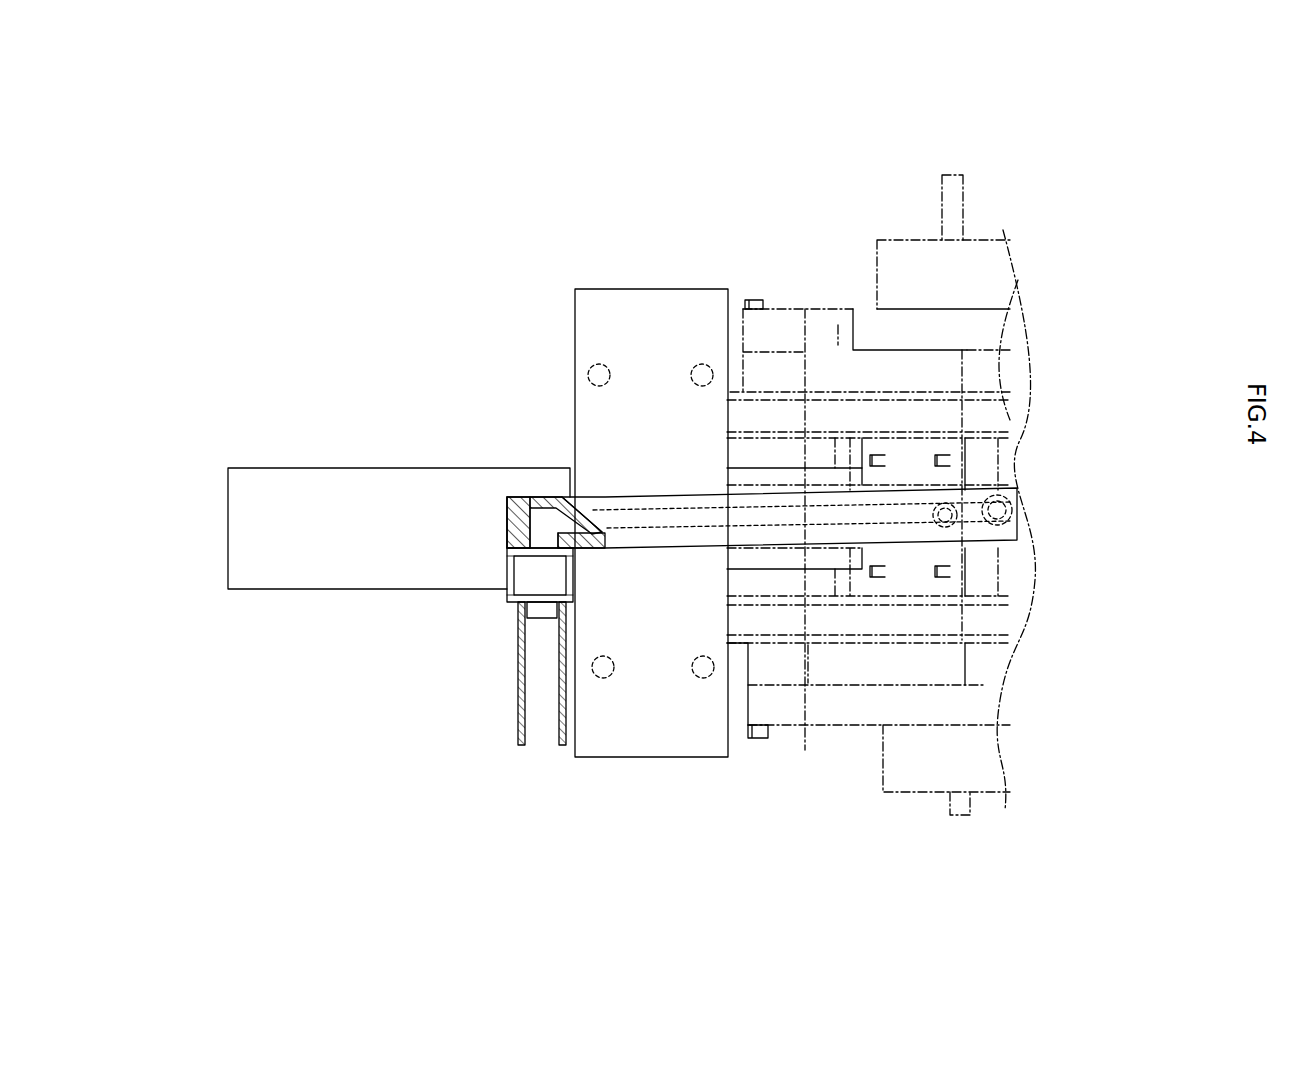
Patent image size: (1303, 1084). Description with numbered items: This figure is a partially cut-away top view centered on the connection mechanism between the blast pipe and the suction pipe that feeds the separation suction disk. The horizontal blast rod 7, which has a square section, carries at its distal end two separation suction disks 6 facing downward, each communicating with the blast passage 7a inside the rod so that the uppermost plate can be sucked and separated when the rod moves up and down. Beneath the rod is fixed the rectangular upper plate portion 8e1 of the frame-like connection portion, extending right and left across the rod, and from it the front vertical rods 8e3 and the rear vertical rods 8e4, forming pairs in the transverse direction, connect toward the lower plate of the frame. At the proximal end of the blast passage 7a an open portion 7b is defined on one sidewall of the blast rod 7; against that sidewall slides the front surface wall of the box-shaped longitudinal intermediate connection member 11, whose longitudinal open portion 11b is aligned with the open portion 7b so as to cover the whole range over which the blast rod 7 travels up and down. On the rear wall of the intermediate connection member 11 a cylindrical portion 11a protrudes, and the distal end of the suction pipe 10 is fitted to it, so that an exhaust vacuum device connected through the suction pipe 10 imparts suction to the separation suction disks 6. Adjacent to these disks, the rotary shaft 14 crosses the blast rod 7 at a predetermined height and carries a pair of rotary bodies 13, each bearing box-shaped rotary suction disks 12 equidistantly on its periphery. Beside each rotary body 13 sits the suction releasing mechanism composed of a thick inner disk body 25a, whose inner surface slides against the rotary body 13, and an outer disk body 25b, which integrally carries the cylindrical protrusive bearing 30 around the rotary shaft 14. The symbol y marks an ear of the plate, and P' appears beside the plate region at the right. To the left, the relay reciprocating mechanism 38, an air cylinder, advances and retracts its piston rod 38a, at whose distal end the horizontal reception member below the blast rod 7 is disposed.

The relay reciprocating mechanism 38 is at (310, 458).
The piston rod 38a is at (395, 480).
The upper plate portion 8e1 is at (575, 307).
The front vertical rods 8e3 is at (702, 365).
The rear vertical rods 8e4 is at (603, 680).
The blast rod 7 is at (642, 497).
The blast passage 7a is at (557, 518).
The open portion 7b is at (538, 535).
The longitudinal open portion 11b is at (520, 500).
The intermediate connection member 11 is at (520, 588).
The cylindrical portion 11a is at (522, 640).
The suction pipe 10 is at (516, 742).
The inner disk body 25a is at (773, 360).
The outer disk body 25b is at (790, 340).
The ear of the plate y is at (838, 325).
The cylindrical protrusive bearing 30 is at (890, 245).
The rotary shaft 14 is at (955, 172).
The rotary body 13 is at (1015, 332).
The rotary suction disks 12 is at (1025, 443).
The separation suction disk 6 is at (1003, 510).
The position P' is at (1040, 675).